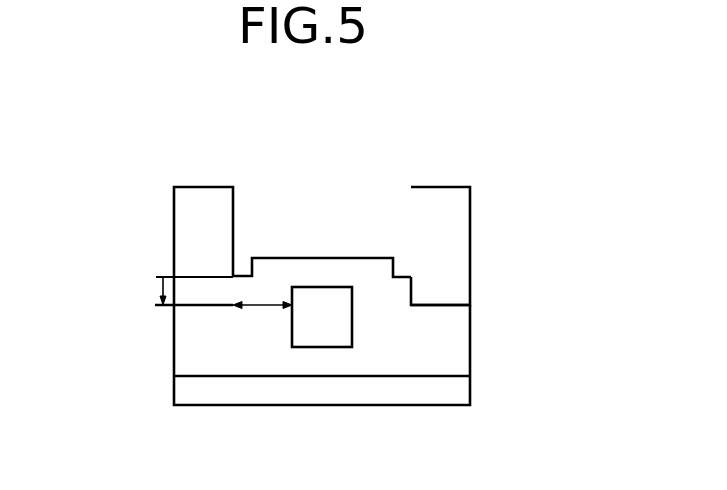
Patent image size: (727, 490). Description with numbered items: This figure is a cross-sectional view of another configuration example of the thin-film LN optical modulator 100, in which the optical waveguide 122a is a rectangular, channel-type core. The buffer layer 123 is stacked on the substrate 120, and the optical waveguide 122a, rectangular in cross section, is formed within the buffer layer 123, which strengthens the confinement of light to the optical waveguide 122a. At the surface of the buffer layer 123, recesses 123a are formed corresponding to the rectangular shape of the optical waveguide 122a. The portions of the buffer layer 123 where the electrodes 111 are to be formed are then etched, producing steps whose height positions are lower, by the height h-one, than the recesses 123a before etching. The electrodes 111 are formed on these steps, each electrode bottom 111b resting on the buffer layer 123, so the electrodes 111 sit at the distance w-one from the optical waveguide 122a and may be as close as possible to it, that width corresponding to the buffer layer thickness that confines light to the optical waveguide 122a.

The thin-film LN optical modulator 100 is at (294, 248).
The electrodes 111 is at (180, 222).
The bottom surface of electrode 111b is at (120, 345).
The buffer layer 123 is at (377, 267).
The recesses 123a is at (242, 277).
The optical waveguide 122a is at (323, 303).
The substrate 120 is at (455, 403).